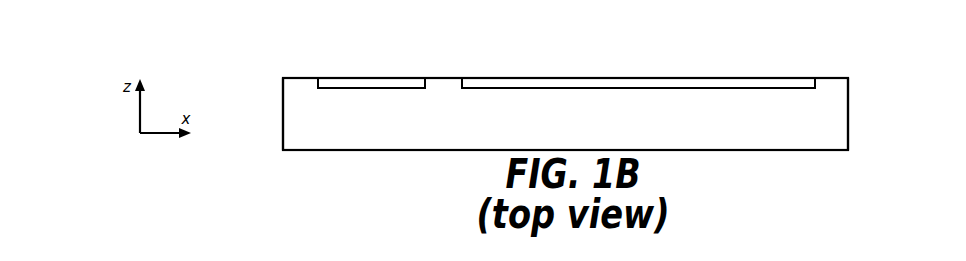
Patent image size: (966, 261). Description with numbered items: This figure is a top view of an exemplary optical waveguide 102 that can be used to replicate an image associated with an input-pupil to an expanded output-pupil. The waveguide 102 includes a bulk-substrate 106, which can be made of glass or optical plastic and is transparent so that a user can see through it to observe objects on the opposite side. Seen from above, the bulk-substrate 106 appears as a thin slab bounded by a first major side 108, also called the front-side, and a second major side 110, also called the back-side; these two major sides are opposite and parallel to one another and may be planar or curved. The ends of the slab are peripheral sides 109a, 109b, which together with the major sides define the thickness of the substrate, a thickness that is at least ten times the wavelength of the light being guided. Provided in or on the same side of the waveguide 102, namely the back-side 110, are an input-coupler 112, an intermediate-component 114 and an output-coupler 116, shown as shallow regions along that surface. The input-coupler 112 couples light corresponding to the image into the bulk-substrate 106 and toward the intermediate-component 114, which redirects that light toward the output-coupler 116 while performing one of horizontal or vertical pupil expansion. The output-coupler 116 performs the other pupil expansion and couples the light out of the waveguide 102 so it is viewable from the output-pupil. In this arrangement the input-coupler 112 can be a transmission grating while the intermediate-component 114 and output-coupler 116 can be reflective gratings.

The optical waveguide 102 is at (245, 67).
The bulk-substrate 106 is at (553, 132).
The first major side 108 is at (832, 148).
The peripheral side 109a is at (848, 112).
The peripheral side 109b is at (283, 112).
The second major side 110 is at (837, 76).
The input-coupler 112 is at (393, 80).
The intermediate-component 114 is at (610, 80).
The output-coupler 116 is at (638, 83).